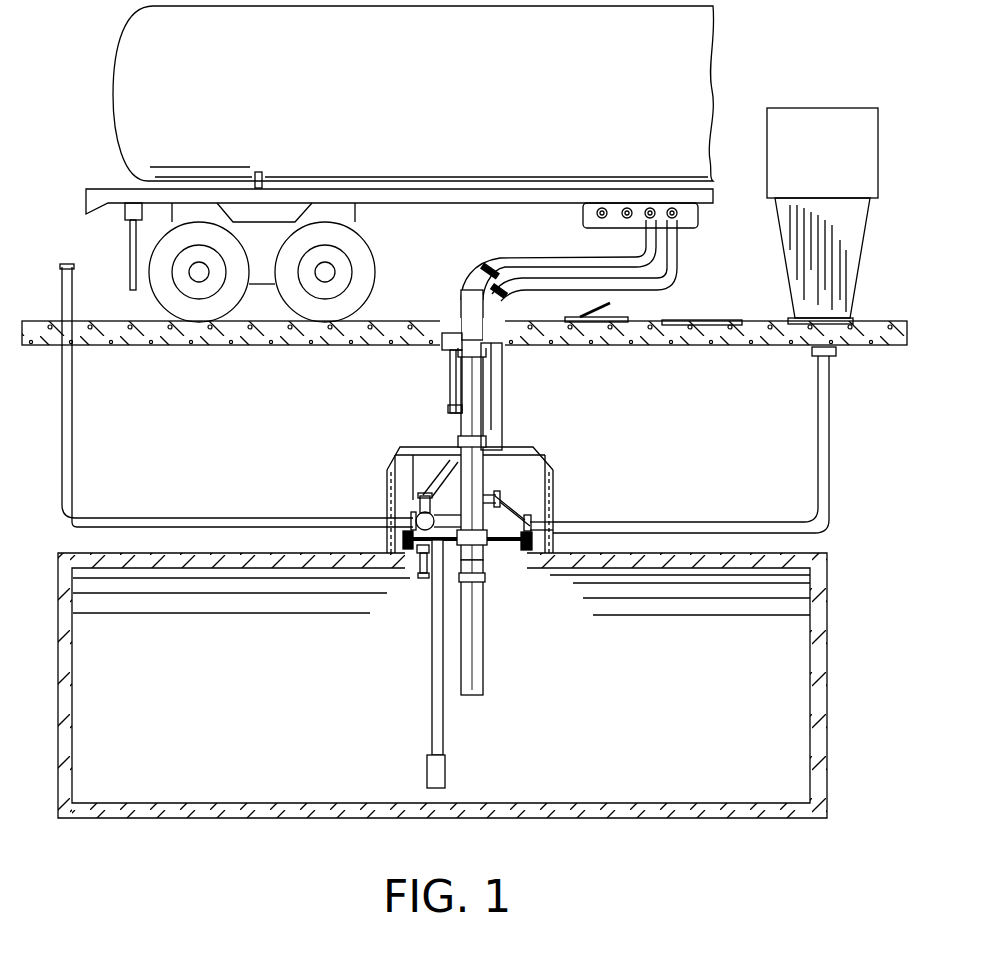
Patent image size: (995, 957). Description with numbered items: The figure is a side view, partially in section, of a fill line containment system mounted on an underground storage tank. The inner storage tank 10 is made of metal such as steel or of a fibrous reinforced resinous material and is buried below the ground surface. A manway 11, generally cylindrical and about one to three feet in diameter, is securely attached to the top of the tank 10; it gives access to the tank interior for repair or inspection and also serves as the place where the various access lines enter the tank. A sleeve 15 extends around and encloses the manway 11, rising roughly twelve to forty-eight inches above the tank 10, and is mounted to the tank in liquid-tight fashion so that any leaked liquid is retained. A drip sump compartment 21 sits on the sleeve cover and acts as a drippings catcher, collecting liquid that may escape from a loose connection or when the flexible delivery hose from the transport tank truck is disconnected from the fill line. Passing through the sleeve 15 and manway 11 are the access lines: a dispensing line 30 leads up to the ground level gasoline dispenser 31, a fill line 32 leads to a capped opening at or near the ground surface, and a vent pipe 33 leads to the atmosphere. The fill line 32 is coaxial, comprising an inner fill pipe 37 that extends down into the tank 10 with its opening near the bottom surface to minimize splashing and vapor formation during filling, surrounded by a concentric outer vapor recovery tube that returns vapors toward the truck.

The inner storage tank 10 is at (368, 800).
The manway 11 is at (518, 550).
The sleeve 15 is at (556, 503).
The drip sump compartment 21 is at (508, 414).
The dispensing line 30 is at (432, 648).
The gasoline dispenser 31 is at (833, 174).
The fill line 32 is at (488, 479).
The vent pipe 33 is at (320, 516).
The inner fill pipe 37 is at (470, 636).